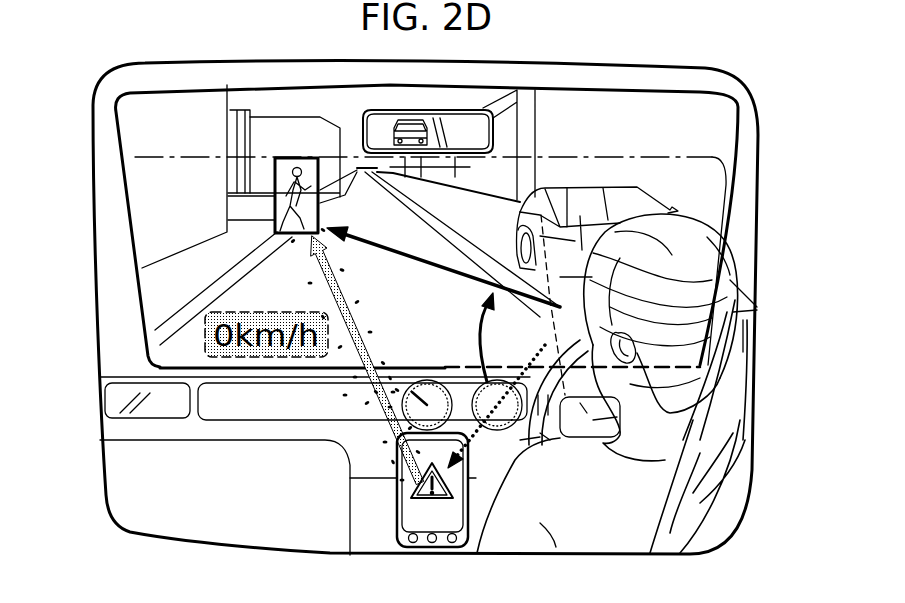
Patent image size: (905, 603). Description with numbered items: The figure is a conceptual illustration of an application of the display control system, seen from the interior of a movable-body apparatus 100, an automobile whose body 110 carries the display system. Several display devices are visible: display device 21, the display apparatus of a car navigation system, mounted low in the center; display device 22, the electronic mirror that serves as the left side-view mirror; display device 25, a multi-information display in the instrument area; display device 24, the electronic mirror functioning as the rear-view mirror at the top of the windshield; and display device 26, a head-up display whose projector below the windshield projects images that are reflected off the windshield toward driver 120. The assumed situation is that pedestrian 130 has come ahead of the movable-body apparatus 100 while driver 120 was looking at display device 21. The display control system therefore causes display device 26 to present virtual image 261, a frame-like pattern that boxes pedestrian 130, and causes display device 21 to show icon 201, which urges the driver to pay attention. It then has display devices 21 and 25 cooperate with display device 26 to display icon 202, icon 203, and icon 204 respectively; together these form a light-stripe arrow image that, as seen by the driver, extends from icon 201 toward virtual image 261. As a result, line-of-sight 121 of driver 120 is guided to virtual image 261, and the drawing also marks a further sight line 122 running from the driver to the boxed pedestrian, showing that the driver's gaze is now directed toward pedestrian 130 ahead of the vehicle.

The movable-body apparatus 100 is at (127, 468).
The body 110 is at (140, 519).
The display device 26 is at (173, 168).
The virtual image 261 is at (275, 200).
The pedestrian 130 is at (320, 191).
The display device 24 is at (377, 122).
The driver 120 is at (723, 280).
The line of sight 122 is at (441, 268).
The line-of-sight 121 is at (480, 418).
The icon 204 is at (336, 288).
The icon 203 is at (377, 393).
The display device 22 is at (170, 412).
The display device 25 is at (228, 411).
The display device 21 is at (408, 510).
The icon 202 is at (395, 445).
The icon 201 is at (450, 492).